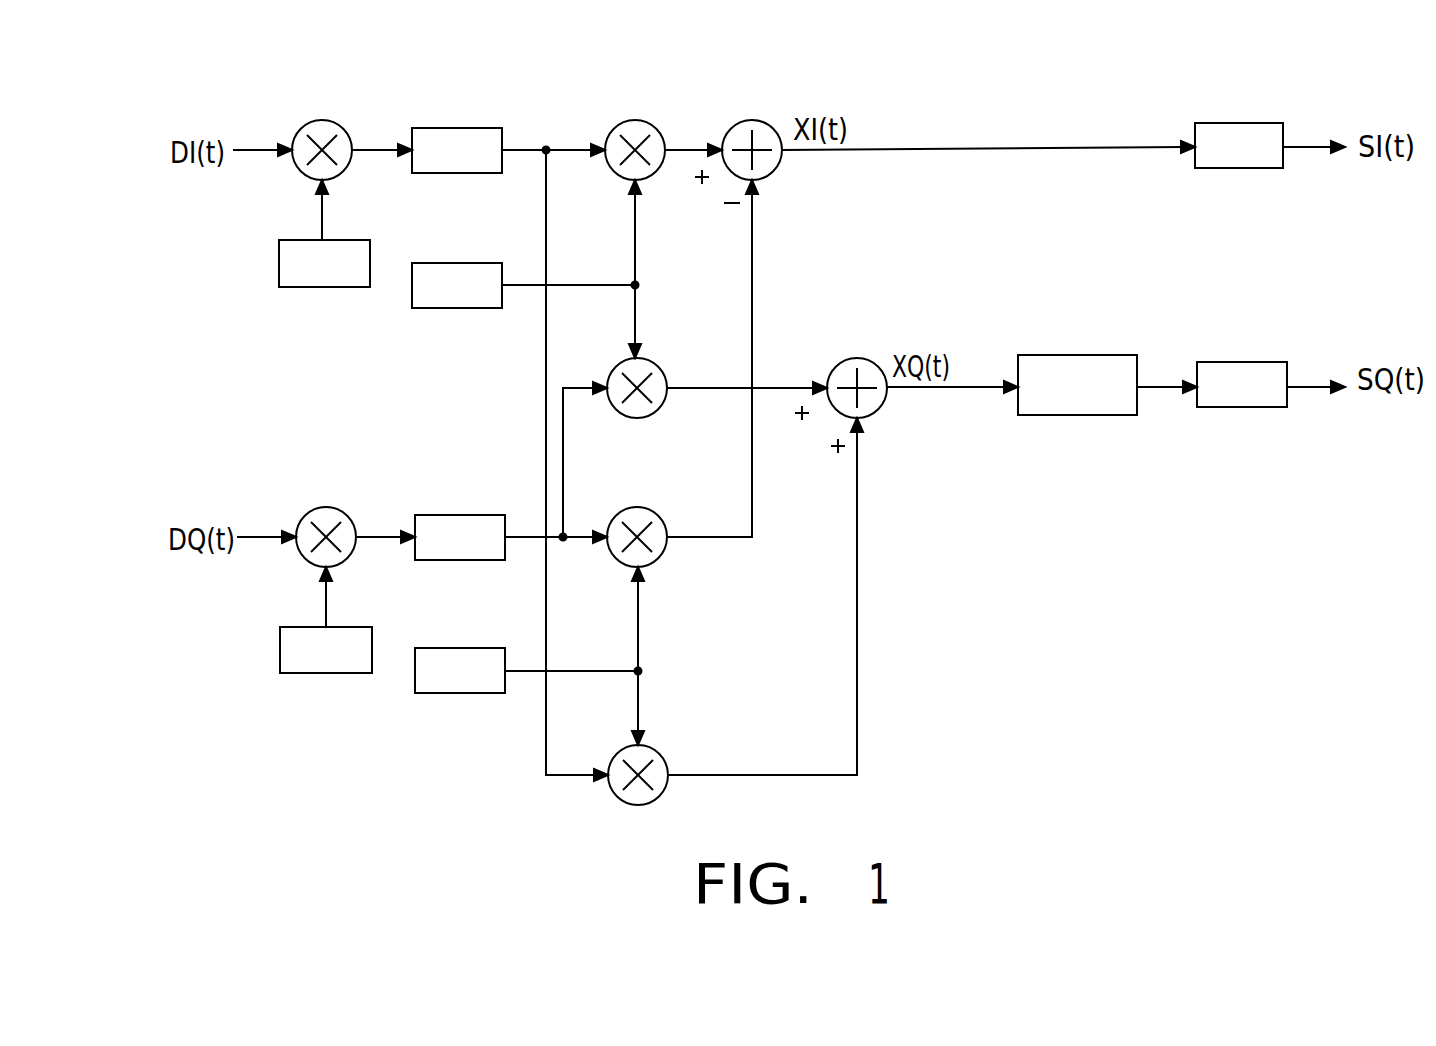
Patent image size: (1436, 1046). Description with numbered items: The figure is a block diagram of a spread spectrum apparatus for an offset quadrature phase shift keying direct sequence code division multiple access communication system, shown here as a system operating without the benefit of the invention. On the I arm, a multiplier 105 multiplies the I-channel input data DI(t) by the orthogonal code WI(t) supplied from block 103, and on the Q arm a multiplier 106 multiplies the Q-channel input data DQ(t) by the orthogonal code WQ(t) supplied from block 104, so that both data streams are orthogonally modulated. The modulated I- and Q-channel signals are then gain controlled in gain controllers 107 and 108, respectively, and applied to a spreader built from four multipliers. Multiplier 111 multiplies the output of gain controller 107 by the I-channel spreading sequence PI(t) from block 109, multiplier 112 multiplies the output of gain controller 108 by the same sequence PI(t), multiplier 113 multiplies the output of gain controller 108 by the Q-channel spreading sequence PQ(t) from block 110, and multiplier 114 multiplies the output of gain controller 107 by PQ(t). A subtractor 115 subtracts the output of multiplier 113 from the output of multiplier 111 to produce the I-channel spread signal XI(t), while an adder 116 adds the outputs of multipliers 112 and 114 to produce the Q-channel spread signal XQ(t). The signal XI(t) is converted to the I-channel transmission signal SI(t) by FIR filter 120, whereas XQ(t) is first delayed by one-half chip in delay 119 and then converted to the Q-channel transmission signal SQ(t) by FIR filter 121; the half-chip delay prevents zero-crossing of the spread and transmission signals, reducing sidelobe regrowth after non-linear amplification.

The in-phase Walsh code generator WI(t) 103 is at (325, 287).
The quadrature Walsh code generator WQ(t) 104 is at (329, 673).
The multiplier 105 is at (335, 121).
The multiplier 106 is at (336, 507).
The gain controller 107 is at (456, 128).
The gain controller 108 is at (457, 515).
The in-phase PN sequence generator PI(t) 109 is at (456, 263).
The quadrature PN sequence generator PQ(t) 110 is at (457, 648).
The multiplier 111 is at (647, 121).
The multiplier 112 is at (648, 360).
The multiplier 113 is at (648, 507).
The multiplier 114 is at (650, 746).
The subtractor 115 is at (766, 121).
The adder 116 is at (866, 357).
The delay 119 is at (1076, 355).
The FIR filter 120 is at (1237, 123).
The FIR filter 121 is at (1240, 362).